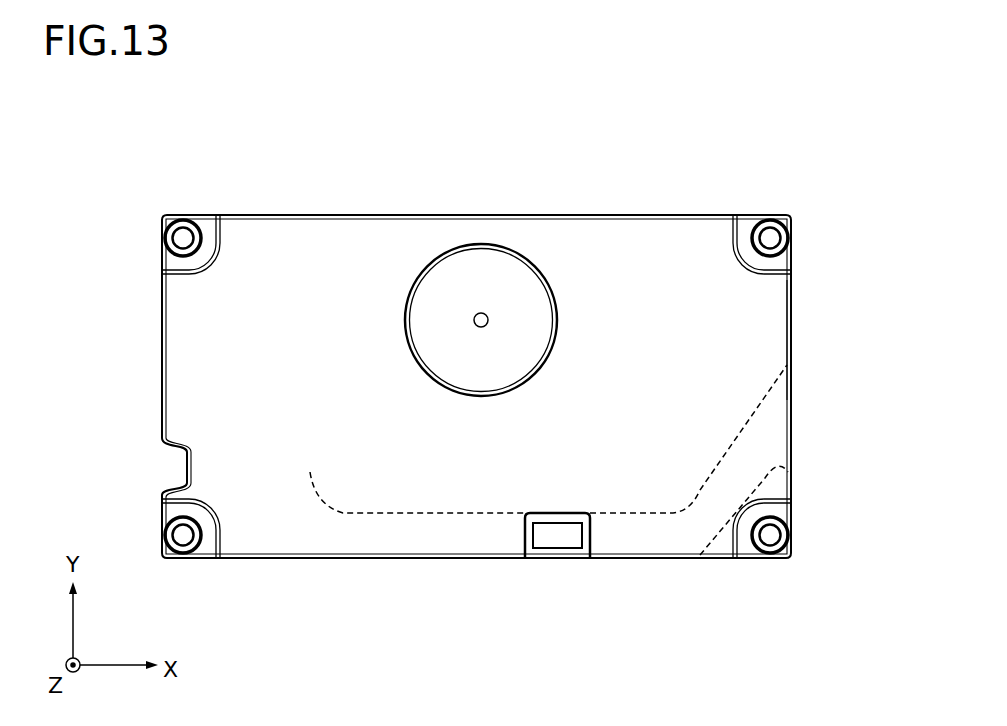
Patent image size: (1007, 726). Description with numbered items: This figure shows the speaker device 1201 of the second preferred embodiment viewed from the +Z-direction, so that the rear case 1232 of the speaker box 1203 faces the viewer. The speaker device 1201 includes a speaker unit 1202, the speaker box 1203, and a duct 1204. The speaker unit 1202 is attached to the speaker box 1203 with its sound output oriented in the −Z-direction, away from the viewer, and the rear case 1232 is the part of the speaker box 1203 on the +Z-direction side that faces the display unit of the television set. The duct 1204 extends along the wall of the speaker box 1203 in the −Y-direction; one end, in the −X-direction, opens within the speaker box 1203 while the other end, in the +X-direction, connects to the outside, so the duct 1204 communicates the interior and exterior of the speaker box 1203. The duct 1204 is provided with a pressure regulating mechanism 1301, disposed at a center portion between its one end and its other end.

The speaker device 1201 is at (636, 150).
The speaker unit 1202 is at (473, 262).
The speaker box 1203 is at (692, 235).
The duct 1204 is at (388, 512).
The rear case 1232 is at (780, 313).
The pressure regulating mechanism 1301 is at (548, 540).